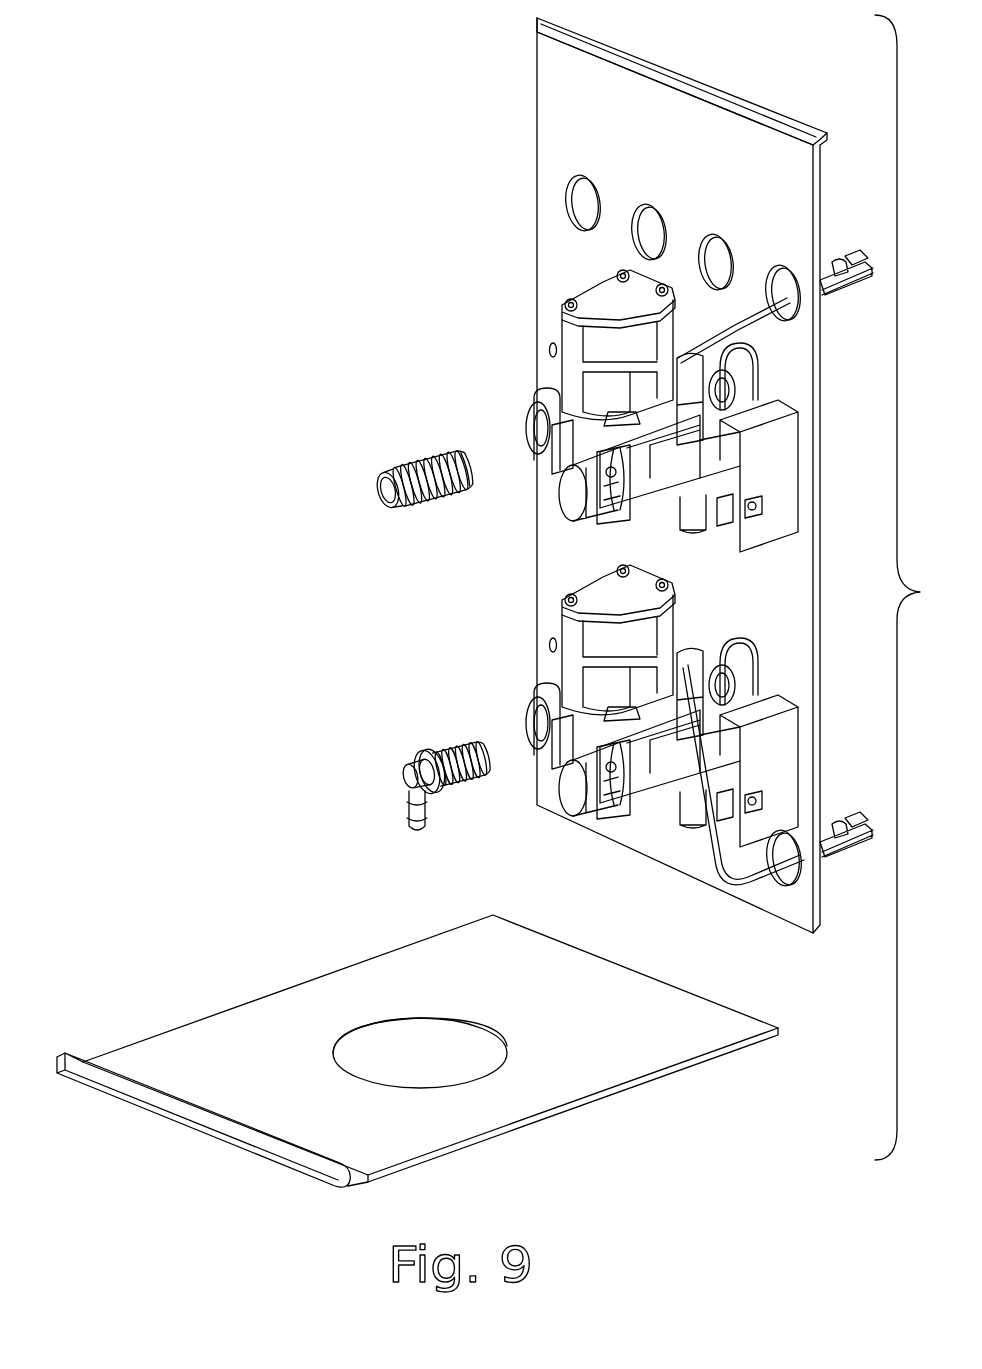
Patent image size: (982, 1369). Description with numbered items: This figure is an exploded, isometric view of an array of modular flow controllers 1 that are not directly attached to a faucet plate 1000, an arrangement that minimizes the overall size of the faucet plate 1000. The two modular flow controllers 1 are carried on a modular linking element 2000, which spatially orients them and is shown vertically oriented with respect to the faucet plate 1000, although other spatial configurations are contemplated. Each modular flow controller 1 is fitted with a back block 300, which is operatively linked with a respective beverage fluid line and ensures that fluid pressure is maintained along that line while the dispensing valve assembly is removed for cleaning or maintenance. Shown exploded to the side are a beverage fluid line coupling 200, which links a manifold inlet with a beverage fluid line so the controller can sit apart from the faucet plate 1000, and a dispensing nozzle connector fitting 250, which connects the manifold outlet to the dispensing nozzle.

The modular flow controller 1 is at (568, 283).
The beverage fluid line coupling 200 is at (408, 460).
The dispensing nozzle connector fitting 250 is at (426, 744).
The back block 300 is at (748, 527).
The faucet plate 1000 is at (562, 1010).
The modular linking element 2000 is at (690, 167).